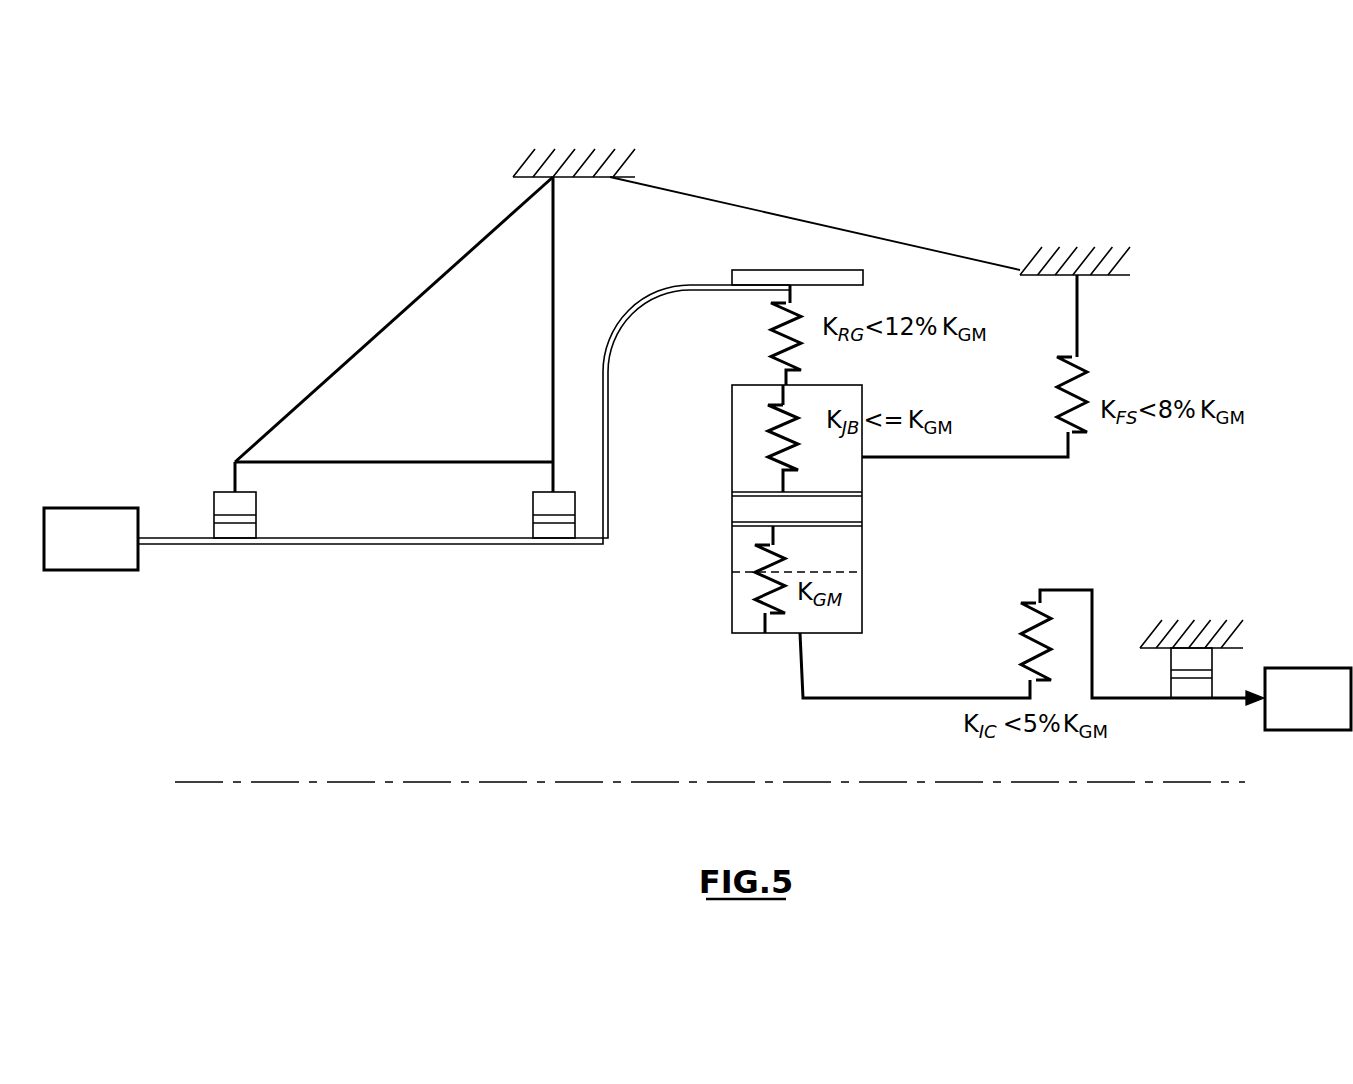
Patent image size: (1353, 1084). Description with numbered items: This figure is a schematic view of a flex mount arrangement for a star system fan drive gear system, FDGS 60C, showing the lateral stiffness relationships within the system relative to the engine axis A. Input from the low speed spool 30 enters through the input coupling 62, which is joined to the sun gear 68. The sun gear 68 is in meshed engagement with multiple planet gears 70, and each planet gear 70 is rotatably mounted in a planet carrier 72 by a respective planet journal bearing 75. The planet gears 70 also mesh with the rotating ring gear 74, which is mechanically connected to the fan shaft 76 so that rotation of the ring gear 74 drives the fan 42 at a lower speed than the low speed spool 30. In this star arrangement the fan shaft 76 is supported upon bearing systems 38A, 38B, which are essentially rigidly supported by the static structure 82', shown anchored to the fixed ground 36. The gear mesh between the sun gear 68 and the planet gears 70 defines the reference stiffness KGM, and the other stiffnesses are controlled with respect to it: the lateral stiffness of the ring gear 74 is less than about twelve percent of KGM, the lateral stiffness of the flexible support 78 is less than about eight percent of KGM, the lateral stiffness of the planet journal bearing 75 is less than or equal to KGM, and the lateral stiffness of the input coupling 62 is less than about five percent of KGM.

The fuselage / fixed structure 36 is at (871, 163).
The static structure 82' is at (394, 319).
The ring gear 74 is at (738, 258).
The fan shaft 76 is at (585, 555).
The fan 42 is at (76, 553).
The bearing system 38A is at (222, 504).
The bearing system 38B is at (540, 504).
The sun gear 68 is at (845, 625).
The planet journal bearing 75 is at (852, 477).
The planet carrier 72 is at (862, 524).
The planet gear 70 is at (852, 552).
The flexible support 78 is at (1036, 461).
The input coupling 62 is at (794, 692).
The low speed spool 30 is at (1296, 713).
The engine axis A is at (674, 782).
The fan drive gear system (FDGS) 60C is at (614, 674).